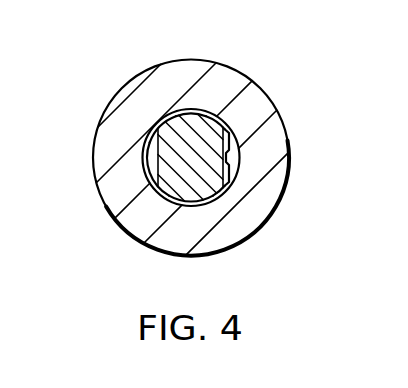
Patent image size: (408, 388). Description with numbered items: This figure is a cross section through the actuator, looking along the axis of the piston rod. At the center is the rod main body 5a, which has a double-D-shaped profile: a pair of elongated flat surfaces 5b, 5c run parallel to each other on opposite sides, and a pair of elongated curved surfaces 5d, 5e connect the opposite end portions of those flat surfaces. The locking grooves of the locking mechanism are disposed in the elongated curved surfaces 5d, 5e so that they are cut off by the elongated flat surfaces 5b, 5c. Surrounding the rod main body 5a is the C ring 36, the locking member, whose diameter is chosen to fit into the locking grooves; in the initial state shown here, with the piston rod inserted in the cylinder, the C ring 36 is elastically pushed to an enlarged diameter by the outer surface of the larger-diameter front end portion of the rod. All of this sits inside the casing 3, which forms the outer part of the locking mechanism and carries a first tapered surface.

The casing 3 is at (262, 203).
The C ring 36 is at (226, 127).
The rod main body 5a is at (159, 124).
The elongated flat surface 5b is at (233, 157).
The elongated flat surface 5c is at (158, 154).
The elongated curved surface 5d is at (193, 117).
The elongated curved surface 5e is at (188, 207).